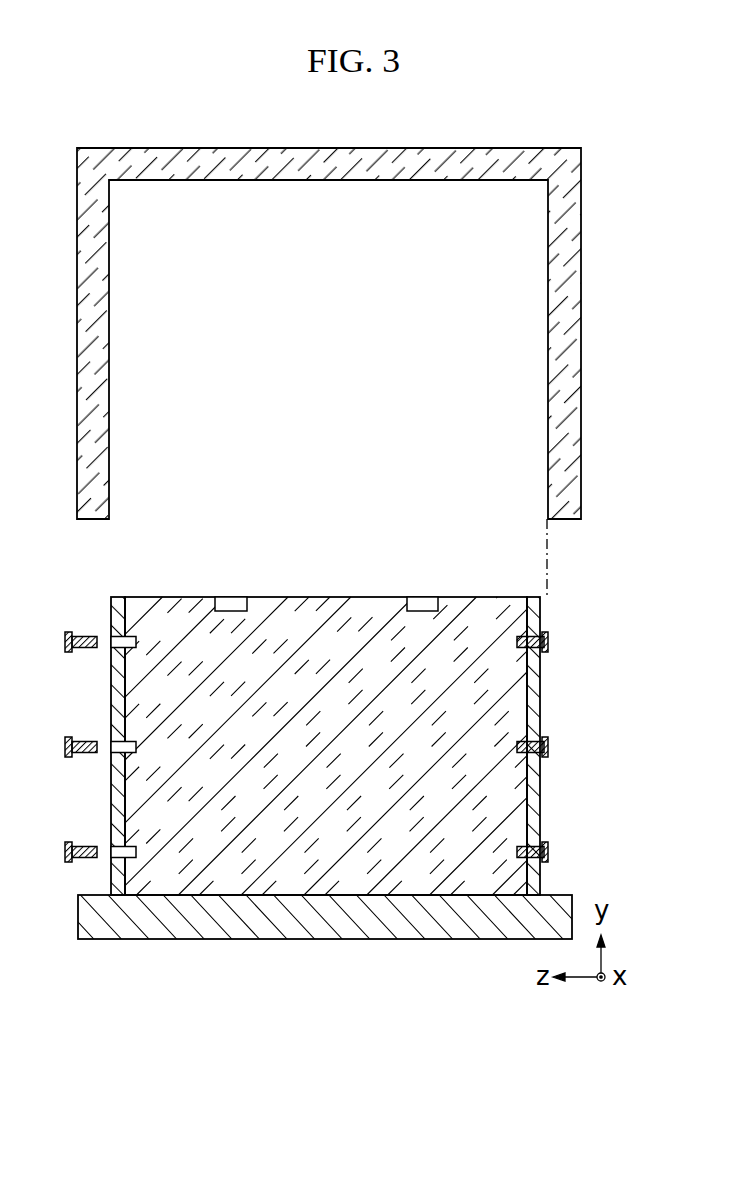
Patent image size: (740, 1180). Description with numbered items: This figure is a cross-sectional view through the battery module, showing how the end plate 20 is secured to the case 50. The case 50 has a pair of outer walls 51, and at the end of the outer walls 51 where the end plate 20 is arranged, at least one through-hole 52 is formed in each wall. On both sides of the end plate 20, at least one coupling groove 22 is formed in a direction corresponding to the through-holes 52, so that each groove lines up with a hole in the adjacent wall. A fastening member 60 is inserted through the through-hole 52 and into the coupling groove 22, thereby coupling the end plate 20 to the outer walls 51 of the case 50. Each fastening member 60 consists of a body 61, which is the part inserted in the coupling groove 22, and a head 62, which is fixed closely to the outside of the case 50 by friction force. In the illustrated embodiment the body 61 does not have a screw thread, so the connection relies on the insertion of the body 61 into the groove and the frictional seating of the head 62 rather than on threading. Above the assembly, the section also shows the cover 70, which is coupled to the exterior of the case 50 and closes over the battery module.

The end plate 20 is at (350, 590).
The coupling groove 22 is at (131, 849).
The case 50 is at (303, 950).
The outer wall 51 is at (118, 609).
The through-hole 52 is at (114, 851).
The fastening member 60 is at (568, 746).
The body 61 is at (533, 755).
The head 62 is at (547, 745).
The cover 70 is at (565, 433).